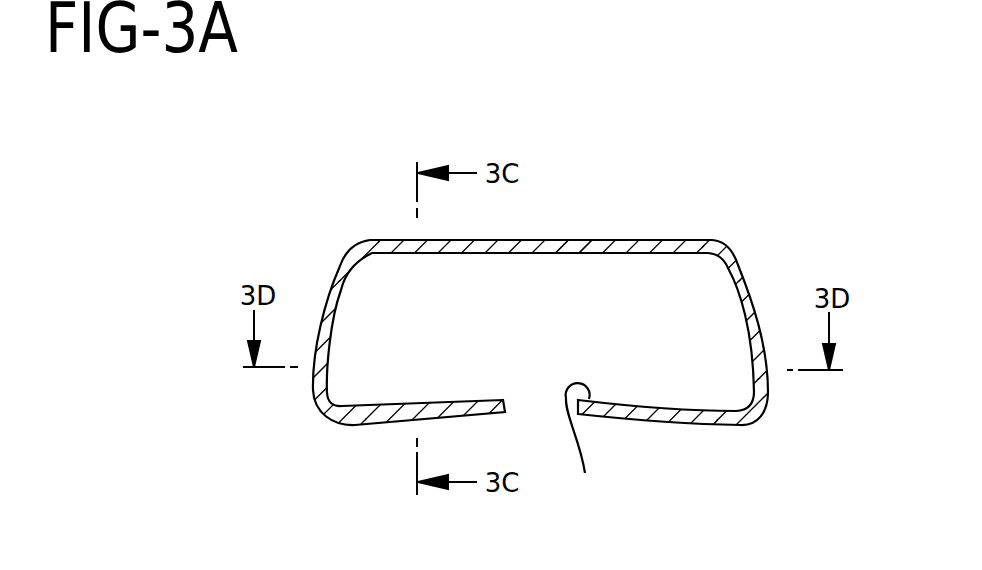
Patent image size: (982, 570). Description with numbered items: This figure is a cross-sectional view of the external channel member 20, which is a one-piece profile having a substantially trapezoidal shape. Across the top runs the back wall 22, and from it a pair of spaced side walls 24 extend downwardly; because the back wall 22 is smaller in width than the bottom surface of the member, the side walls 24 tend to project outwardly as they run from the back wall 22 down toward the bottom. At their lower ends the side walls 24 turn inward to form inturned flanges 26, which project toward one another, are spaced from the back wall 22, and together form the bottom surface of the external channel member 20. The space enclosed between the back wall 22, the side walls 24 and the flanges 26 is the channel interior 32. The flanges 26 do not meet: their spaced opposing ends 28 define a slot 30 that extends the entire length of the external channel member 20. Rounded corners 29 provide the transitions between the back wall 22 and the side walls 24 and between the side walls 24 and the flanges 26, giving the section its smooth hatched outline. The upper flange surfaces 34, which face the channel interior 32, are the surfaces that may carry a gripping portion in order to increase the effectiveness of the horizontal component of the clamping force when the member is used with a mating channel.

The external channel member 20 is at (317, 248).
The back wall 22 is at (633, 240).
The side walls 24 is at (320, 312).
The inturned flanges 26 is at (390, 427).
The opposing ends 28 is at (588, 417).
The rounded corners 29 is at (356, 243).
The slot 30 is at (535, 378).
The channel interior 32 is at (555, 318).
The upper flange surfaces 34 is at (585, 454).